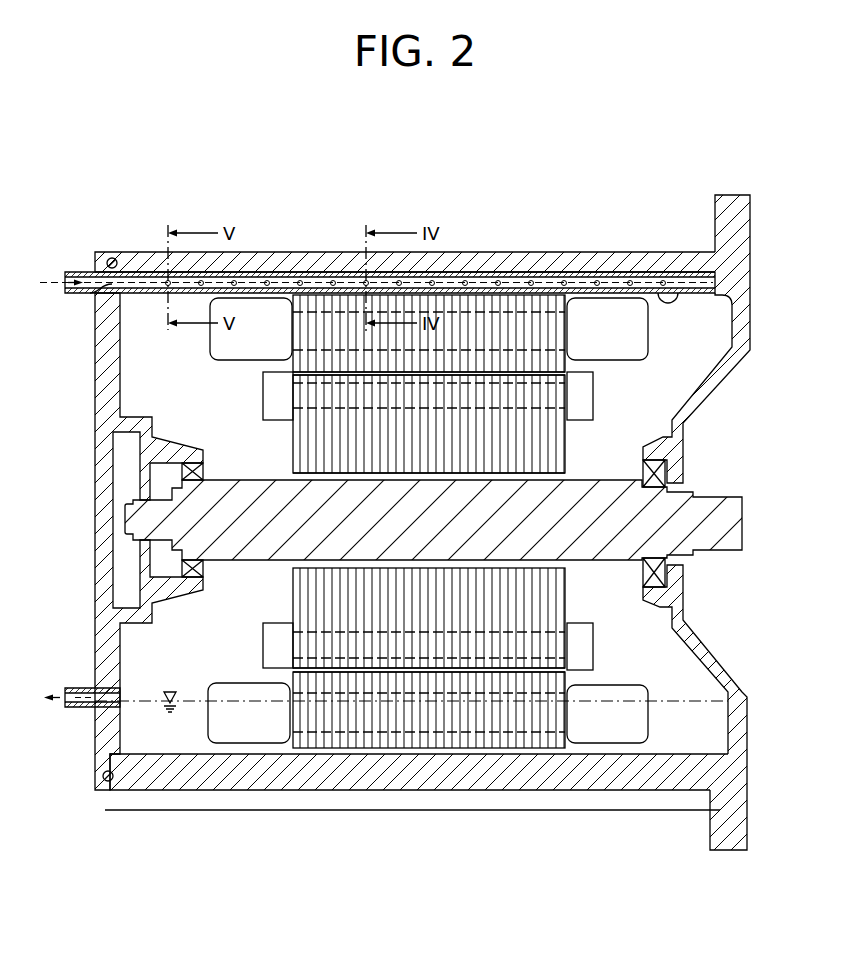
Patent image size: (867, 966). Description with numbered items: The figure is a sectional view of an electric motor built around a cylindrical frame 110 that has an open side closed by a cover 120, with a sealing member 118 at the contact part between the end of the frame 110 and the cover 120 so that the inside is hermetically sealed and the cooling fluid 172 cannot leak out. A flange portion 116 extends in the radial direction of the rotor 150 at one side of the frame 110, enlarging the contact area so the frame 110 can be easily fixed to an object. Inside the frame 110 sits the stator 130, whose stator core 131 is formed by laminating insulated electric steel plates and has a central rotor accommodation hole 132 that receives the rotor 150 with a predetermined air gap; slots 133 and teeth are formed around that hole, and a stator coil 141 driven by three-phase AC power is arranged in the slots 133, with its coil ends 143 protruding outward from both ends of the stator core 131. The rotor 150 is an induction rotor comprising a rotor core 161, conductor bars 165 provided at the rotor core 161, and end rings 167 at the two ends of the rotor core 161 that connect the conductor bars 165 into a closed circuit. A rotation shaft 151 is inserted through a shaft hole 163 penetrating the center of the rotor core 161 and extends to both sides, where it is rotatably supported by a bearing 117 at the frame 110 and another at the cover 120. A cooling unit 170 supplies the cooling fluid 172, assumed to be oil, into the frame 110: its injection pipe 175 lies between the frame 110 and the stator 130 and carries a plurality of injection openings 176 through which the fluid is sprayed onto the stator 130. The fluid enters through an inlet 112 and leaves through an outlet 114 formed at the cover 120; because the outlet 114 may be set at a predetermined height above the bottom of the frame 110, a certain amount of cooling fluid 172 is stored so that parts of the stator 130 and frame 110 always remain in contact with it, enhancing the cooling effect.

The frame 110 is at (535, 250).
The inlet 112 is at (82, 268).
The outlet 114 is at (95, 686).
The flange portion 116 is at (712, 214).
The bearing 117 is at (190, 567).
The sealing member 118 is at (108, 782).
The cover 120 is at (98, 372).
The stator 130 is at (428, 531).
The stator core 131 is at (477, 742).
The rotor accommodation hole 132 is at (532, 640).
The slots 133 is at (455, 724).
The stator coil 141 is at (598, 733).
The coil ends 143 is at (258, 312).
The rotor 150 is at (424, 642).
The rotation shaft 151 is at (733, 522).
The rotor core 161 is at (347, 613).
The shaft hole 163 is at (538, 542).
The conductor bars 165 is at (392, 618).
The end rings 167 is at (278, 655).
The cooling unit 170 is at (363, 229).
The cooling fluid 172 is at (695, 733).
The injection pipe 175 is at (655, 298).
The injection openings 176 is at (342, 273).